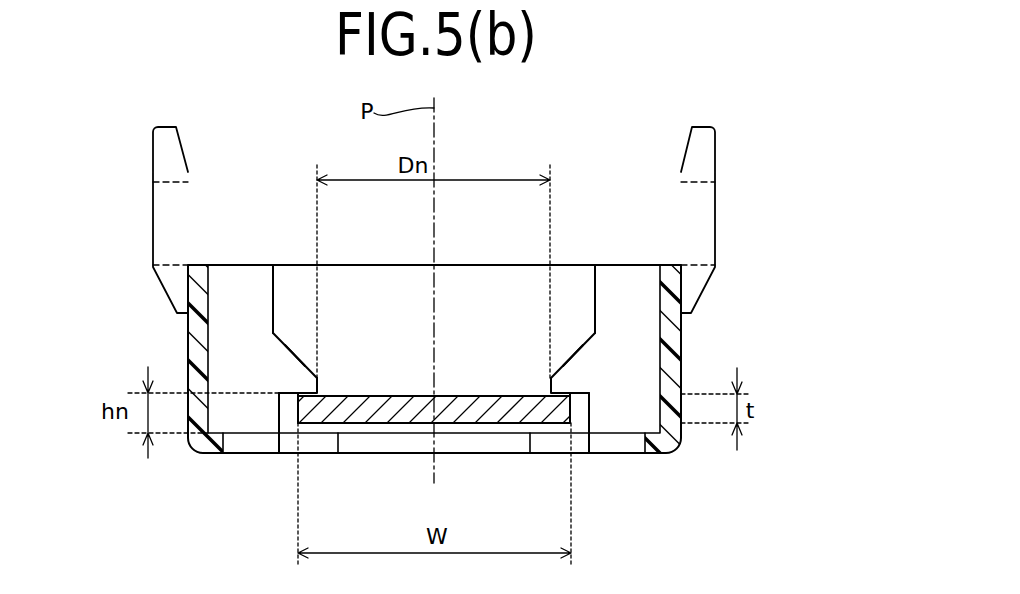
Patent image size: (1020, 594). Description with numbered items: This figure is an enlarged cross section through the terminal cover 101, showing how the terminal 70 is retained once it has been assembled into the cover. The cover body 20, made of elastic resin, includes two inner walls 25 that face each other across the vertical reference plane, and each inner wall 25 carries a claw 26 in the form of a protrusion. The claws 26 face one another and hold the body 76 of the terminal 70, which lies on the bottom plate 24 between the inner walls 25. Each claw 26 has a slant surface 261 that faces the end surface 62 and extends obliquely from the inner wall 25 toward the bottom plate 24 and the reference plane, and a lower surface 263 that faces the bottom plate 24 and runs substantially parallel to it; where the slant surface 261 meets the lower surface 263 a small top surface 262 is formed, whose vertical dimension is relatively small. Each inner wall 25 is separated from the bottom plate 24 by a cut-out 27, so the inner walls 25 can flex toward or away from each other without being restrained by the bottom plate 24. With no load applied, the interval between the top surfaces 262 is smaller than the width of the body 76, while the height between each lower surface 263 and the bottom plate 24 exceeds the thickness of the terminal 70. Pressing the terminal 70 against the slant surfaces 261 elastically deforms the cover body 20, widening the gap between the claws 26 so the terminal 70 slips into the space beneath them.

The terminal cover 101 is at (622, 156).
The cover body 20 is at (669, 477).
The bottom plate 24 is at (388, 453).
The inner wall 25 is at (275, 293).
The claw 26 is at (280, 373).
The slant surface 261 is at (298, 360).
The top surface 262 is at (318, 388).
The lower surface 263 is at (303, 443).
The cut-out 27 is at (321, 453).
The end surface 62 is at (235, 265).
The terminal 70 is at (506, 427).
The body 76 is at (459, 420).